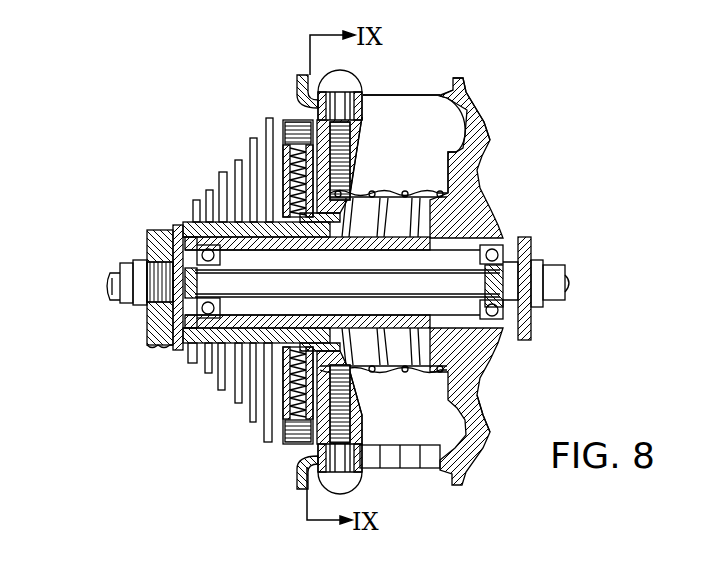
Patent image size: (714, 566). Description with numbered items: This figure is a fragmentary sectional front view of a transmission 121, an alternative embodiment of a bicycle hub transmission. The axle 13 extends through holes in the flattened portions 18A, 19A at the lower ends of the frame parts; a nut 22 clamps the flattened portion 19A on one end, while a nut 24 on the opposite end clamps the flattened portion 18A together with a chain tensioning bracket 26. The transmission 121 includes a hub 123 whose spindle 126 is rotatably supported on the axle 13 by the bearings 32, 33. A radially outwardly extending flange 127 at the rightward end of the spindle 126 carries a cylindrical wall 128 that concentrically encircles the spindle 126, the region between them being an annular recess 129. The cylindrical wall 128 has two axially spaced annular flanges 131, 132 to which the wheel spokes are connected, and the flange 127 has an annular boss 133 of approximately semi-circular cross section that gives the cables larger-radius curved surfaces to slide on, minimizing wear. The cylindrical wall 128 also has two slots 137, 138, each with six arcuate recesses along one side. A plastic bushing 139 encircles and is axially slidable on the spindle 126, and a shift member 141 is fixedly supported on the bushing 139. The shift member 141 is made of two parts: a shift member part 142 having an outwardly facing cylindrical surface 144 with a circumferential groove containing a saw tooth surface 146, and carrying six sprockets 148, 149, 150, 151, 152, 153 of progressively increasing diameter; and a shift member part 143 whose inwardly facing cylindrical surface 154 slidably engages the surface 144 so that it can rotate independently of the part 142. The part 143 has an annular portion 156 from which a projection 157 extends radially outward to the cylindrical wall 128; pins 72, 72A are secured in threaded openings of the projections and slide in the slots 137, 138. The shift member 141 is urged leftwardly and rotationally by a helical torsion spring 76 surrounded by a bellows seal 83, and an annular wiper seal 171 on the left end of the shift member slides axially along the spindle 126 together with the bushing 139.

The transmission 121 is at (145, 118).
The axle 13 is at (107, 287).
The nut 24 is at (125, 278).
The chain tensioning bracket 26 is at (153, 325).
The bearing 32 is at (187, 308).
The bearing 33 is at (518, 312).
The flattened portion 18A is at (175, 347).
The flattened portion 19A is at (527, 326).
The nut 22 is at (563, 275).
The annular wiper seal 171 is at (182, 240).
The plastic bushing 139 is at (200, 228).
The shift member part 142 is at (218, 222).
The shift member 141 is at (240, 200).
The shift member part 143 is at (287, 162).
The annular flange 131 is at (298, 72).
The pin 72 is at (368, 86).
The pin 72A is at (365, 490).
The cylindrical wall 128 is at (445, 97).
The annular flange 132 is at (458, 82).
The annular boss 133 is at (478, 128).
The flange 127 is at (473, 178).
The slot 137 is at (413, 107).
The annular portion 156 is at (330, 213).
The cylindrical surface 144 is at (323, 220).
The helical torsion spring 76 is at (413, 193).
The saw tooth surface 146 is at (307, 282).
The cylindrical surface 154 is at (342, 240).
The spindle 126 is at (440, 244).
The bellows seal 83 is at (410, 375).
The projection 157 is at (383, 410).
The slot 138 is at (417, 458).
The annular recess 129 is at (425, 422).
The hub 123 is at (495, 417).
The sprocket 148 is at (190, 363).
The sprocket 149 is at (207, 373).
The sprocket 150 is at (220, 390).
The sprocket 151 is at (237, 405).
The sprocket 152 is at (250, 422).
The sprocket 153 is at (267, 443).